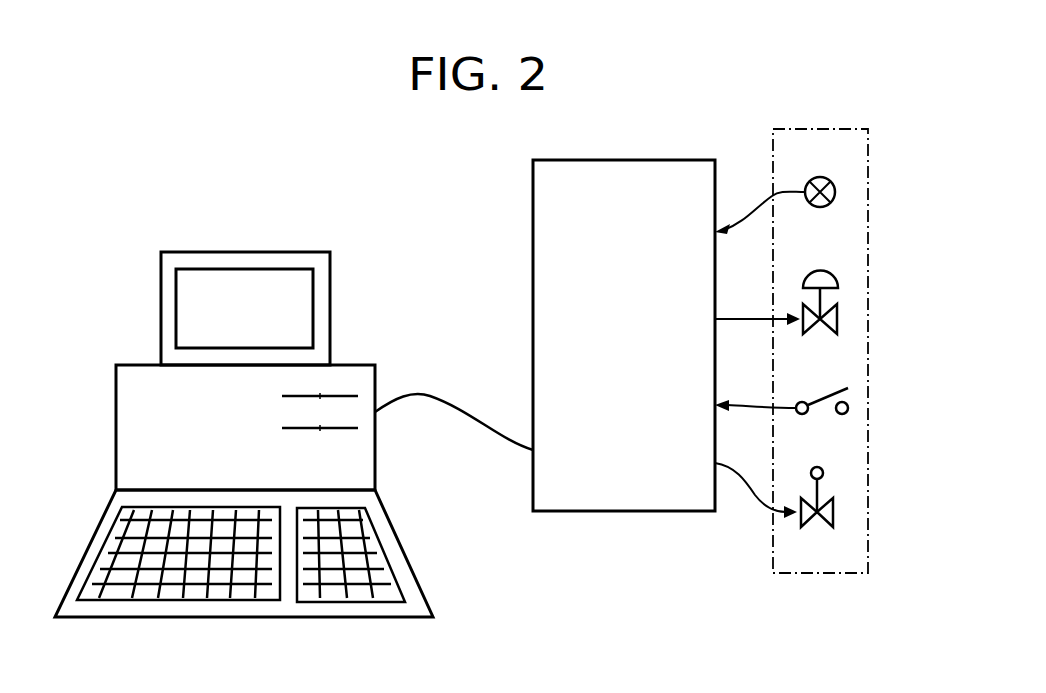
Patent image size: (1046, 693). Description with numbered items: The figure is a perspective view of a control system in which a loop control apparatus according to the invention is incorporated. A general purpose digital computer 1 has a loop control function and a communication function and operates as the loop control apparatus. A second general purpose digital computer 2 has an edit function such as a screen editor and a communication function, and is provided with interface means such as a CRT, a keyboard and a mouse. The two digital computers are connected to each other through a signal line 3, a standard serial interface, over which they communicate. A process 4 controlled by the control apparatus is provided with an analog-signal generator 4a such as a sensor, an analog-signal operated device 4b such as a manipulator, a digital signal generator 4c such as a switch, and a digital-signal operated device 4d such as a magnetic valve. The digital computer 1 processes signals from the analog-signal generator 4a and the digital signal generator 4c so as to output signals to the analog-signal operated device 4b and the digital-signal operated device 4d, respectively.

The general purpose digital computer 1 is at (662, 160).
The general purpose digital computer 2 is at (334, 283).
The RS-232C signal line 3 is at (498, 437).
The process 4 is at (828, 575).
The analog-signal generator 4a is at (835, 192).
The analog-signal operated device 4b is at (833, 298).
The digital signal generator 4c is at (848, 408).
The digital-signal operated device 4d is at (838, 512).